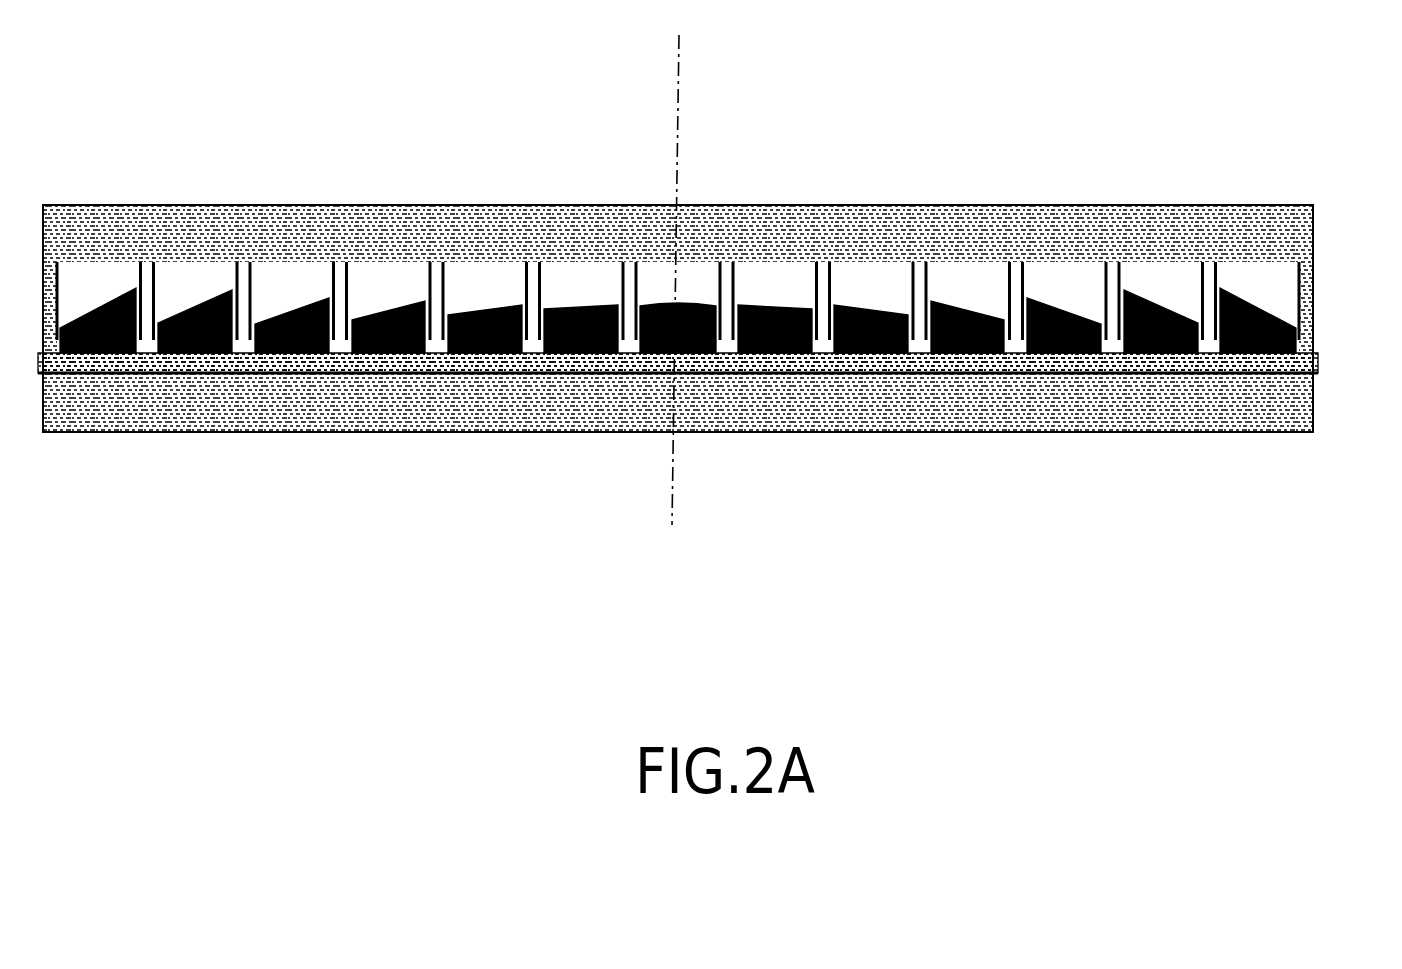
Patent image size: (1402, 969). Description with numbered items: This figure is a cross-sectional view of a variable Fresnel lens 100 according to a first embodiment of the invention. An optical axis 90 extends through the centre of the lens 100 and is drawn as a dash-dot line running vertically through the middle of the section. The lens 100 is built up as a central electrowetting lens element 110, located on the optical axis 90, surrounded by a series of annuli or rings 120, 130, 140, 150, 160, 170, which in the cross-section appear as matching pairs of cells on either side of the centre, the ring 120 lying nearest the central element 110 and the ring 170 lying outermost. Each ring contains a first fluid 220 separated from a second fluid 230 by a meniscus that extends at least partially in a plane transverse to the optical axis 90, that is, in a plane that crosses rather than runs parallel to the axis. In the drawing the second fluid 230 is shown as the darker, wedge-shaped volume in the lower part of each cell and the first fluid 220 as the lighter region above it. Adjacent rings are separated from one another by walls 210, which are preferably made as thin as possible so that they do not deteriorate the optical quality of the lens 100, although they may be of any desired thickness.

The optical axis 90 is at (672, 492).
The variable Fresnel lens 100 is at (1247, 458).
The central electrowetting lens element 110 is at (657, 262).
The ring 120 is at (565, 262).
The ring 130 is at (472, 262).
The ring 140 is at (378, 262).
The ring 150 is at (285, 262).
The ring 160 is at (192, 262).
The ring 170 is at (98, 262).
The walls 210 is at (147, 342).
The first fluid 220 is at (1275, 289).
The second fluid 230 is at (1278, 314).